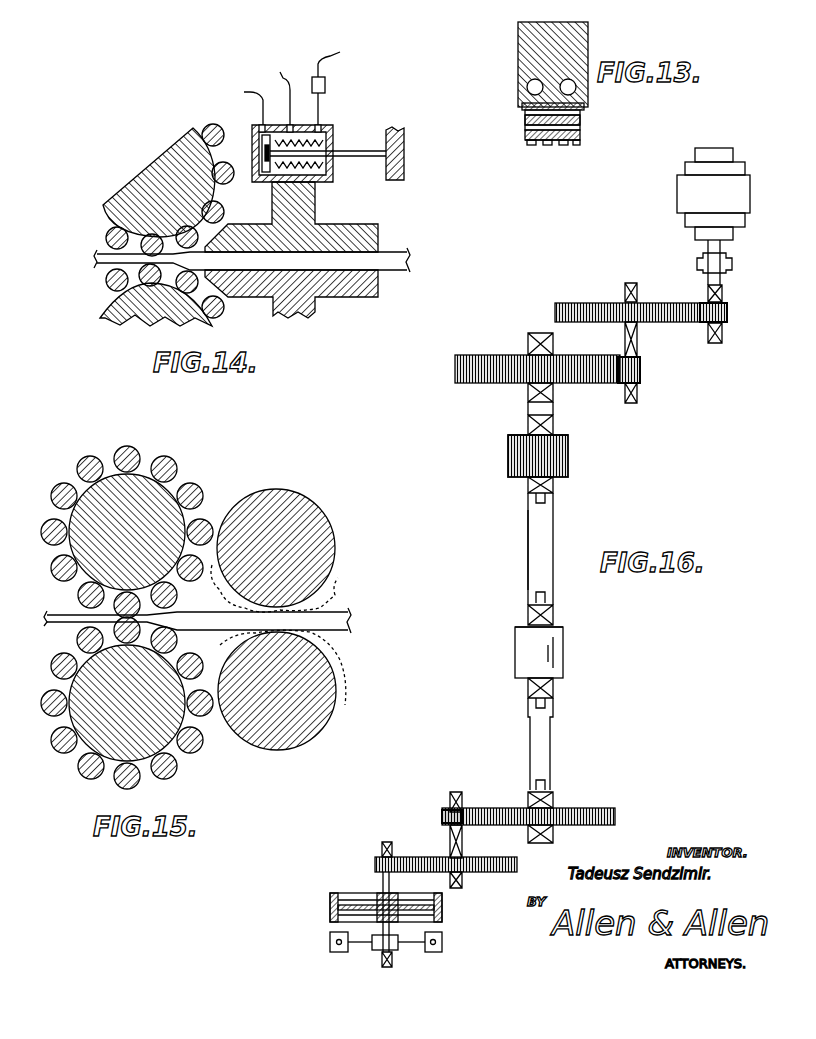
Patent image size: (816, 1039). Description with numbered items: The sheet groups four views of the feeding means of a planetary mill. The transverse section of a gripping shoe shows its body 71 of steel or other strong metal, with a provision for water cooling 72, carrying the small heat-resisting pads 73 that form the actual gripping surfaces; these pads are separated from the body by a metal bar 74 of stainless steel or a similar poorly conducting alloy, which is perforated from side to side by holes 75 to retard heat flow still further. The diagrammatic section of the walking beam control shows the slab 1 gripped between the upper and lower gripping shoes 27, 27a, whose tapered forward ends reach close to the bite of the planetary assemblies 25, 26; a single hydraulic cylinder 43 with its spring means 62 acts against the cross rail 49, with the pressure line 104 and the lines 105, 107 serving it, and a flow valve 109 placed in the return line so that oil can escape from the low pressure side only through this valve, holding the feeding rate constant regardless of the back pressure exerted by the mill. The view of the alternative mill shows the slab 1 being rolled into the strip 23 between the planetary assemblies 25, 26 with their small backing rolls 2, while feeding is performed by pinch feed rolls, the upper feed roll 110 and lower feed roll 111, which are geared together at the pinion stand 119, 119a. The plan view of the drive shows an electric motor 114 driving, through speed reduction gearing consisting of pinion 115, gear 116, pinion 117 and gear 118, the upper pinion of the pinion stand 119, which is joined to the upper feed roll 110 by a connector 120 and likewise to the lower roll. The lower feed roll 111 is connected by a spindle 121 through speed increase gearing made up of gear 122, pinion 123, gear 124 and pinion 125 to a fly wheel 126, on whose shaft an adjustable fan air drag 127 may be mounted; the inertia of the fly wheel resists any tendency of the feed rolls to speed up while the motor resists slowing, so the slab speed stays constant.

In FIG. 13, the body 71 is at (588, 33).
In FIG. 13, the water cooling provision 72 is at (576, 90).
In FIG. 13, the pads 73 is at (565, 145).
In FIG. 13, the metal bar 74 is at (580, 120).
In FIG. 13, the holes 75 is at (580, 134).
In FIG. 14, the slab 1 is at (395, 248).
In FIG. 15, the backing rolls 2 is at (175, 462).
In FIG. 15, the strip 23 is at (60, 622).
In FIG. 14, the planetary assembly 25 is at (160, 162).
In FIG. 15, the planetary assembly 25 is at (127, 532).
In FIG. 14, the planetary assembly 26 is at (150, 320).
In FIG. 15, the planetary assembly 26 is at (127, 703).
In FIG. 14, the gripping shoe 27 is at (291, 217).
In FIG. 14, the gripping shoe 27a is at (291, 294).
In FIG. 14, the hydraulic cylinder 43 is at (330, 127).
In FIG. 14, the cross rail 49 is at (404, 135).
In FIG. 14, the spring means 62 is at (326, 168).
In FIG. 14, the pressure line 104 is at (236, 102).
In FIG. 14, the line 105 is at (270, 90).
In FIG. 14, the line 107 is at (347, 83).
In FIG. 14, the flow valve 109 is at (325, 85).
In FIG. 15, the upper feed roll 110 is at (316, 518).
In FIG. 16, the upper feed roll 110 is at (563, 655).
In FIG. 15, the lower feed roll 111 is at (323, 715).
In FIG. 16, the electric motor 114 is at (750, 178).
In FIG. 16, the pinion 115 is at (727, 312).
In FIG. 16, the gear 116 is at (686, 280).
In FIG. 16, the pinion 117 is at (640, 370).
In FIG. 16, the gear 118 is at (575, 383).
In FIG. 15, the pinion stand 119 is at (333, 590).
In FIG. 16, the pinion stand 119 is at (568, 460).
In FIG. 15, the pinion stand gearing 119a is at (343, 657).
In FIG. 16, the connector 120 is at (553, 530).
In FIG. 16, the spindle 121 is at (550, 752).
In FIG. 16, the gear 122 is at (600, 808).
In FIG. 16, the pinion 123 is at (442, 815).
In FIG. 16, the gear 124 is at (520, 838).
In FIG. 16, the pinion 125 is at (375, 862).
In FIG. 16, the fly wheel 126 is at (330, 905).
In FIG. 16, the adjustable fan air drag 127 is at (330, 942).